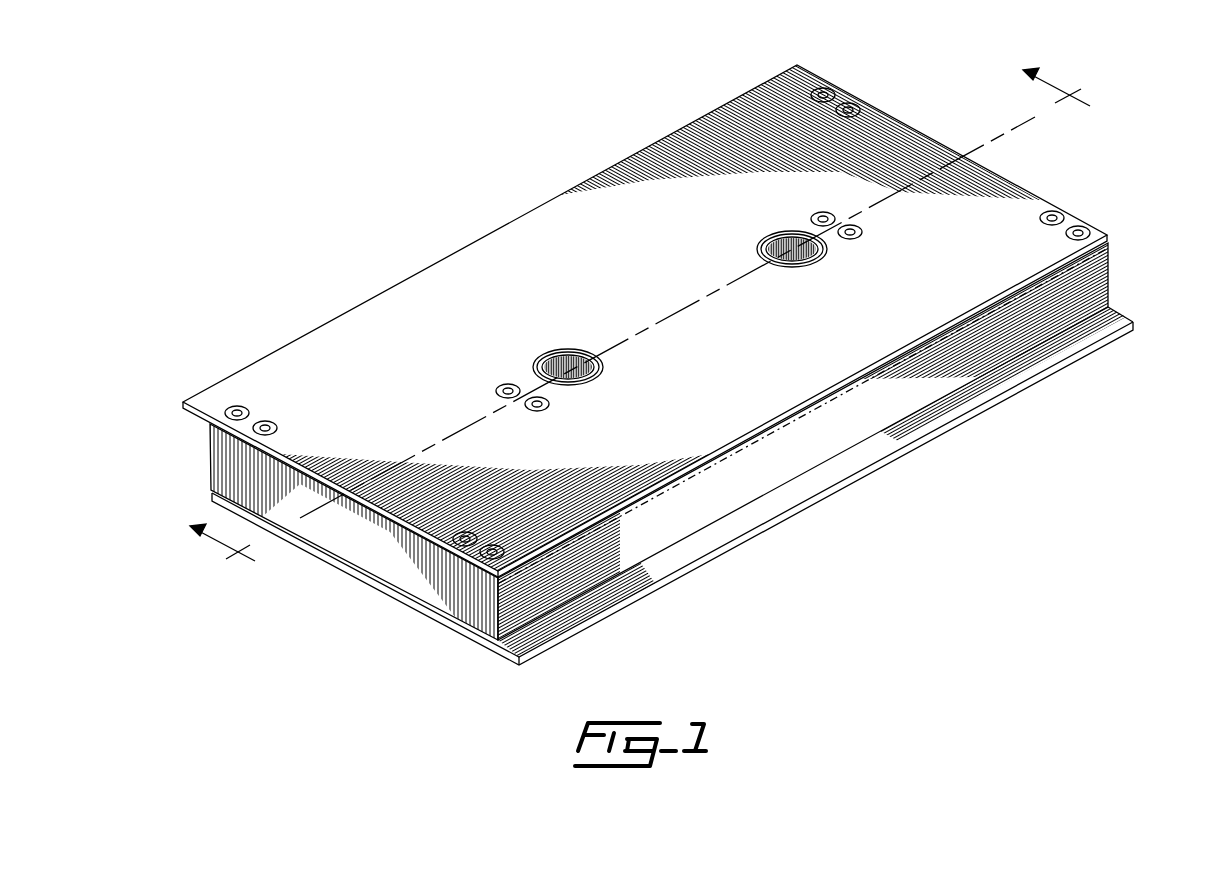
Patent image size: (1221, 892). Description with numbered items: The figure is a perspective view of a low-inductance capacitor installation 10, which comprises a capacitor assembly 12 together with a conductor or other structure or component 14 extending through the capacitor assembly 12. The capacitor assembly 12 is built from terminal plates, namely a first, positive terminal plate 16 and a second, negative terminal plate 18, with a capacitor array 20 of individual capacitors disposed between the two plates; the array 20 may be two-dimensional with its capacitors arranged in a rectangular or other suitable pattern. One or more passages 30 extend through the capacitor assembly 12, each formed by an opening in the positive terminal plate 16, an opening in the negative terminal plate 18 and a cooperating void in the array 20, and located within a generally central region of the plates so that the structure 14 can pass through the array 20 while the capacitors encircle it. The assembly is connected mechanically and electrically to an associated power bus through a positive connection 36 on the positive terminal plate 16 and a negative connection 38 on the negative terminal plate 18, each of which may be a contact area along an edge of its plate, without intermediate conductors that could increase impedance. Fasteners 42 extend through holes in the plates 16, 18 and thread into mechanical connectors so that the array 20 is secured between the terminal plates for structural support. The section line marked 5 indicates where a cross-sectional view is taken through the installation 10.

The section line 5- 5 is at (630, 306).
The capacitor installation 10 is at (336, 128).
The capacitor assembly 12 is at (1132, 232).
The conductor or other structure or component 14 is at (778, 232).
The first (positive) terminal plate 16 is at (1012, 397).
The second (negative) terminal plate 18 is at (933, 136).
The capacitor array 20 is at (373, 548).
The passage 30 is at (603, 378).
The positive connection 36 is at (628, 585).
The negative connection 38 is at (465, 280).
The fasteners 42 is at (827, 90).